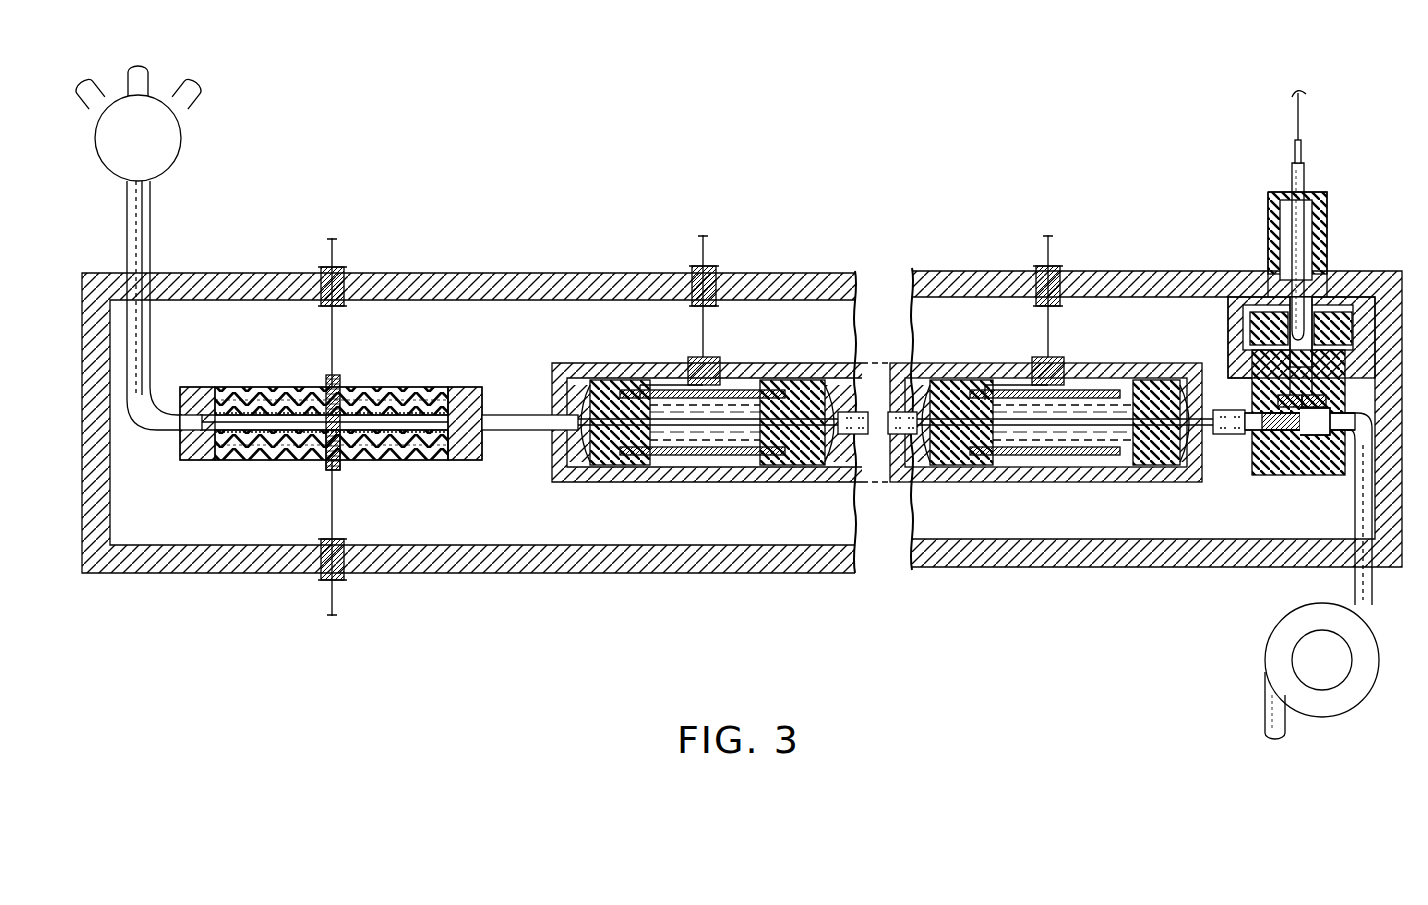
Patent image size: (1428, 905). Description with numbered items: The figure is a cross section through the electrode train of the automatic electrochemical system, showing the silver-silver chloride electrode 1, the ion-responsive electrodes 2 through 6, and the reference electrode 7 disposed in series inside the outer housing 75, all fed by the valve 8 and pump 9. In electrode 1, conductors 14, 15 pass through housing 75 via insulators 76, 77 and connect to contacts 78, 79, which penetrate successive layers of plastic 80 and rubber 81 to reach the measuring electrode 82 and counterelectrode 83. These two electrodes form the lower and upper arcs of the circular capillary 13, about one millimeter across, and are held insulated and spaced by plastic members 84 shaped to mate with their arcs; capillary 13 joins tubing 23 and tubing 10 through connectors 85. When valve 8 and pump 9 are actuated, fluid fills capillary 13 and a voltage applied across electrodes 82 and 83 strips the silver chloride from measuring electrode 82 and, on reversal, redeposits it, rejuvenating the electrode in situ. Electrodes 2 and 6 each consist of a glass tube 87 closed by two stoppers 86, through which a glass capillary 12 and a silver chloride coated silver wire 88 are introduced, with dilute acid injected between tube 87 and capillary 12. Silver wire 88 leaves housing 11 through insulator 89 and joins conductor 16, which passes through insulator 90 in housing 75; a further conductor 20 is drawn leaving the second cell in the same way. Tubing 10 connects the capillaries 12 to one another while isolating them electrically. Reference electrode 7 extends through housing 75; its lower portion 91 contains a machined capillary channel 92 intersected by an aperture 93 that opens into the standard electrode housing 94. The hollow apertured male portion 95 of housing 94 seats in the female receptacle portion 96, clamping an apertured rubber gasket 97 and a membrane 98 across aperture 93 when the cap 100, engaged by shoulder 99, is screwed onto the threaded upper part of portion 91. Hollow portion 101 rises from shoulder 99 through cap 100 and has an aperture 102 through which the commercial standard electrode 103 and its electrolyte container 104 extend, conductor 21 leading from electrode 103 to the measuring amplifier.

The electrode 1 is at (418, 348).
The electrode 2 is at (784, 348).
The electrode 6 is at (1114, 346).
The reference electrode 7 is at (1245, 227).
The valve 8 is at (183, 143).
The pump 9 is at (1266, 655).
The tubing 10 is at (508, 415).
The housing 11 is at (578, 363).
The glass capillary 12 is at (620, 465).
The circular capillary 13 is at (208, 445).
The conductor 14 is at (329, 615).
The conductor 15 is at (330, 250).
The conductor 16 is at (702, 250).
The electrical lead 20 is at (1046, 250).
The conductor 21 is at (1297, 108).
The tubing 23 is at (154, 235).
The housing 75 is at (472, 273).
The insulator 76 is at (346, 582).
The insulator 77 is at (346, 270).
The contact 78 is at (342, 468).
The contact 79 is at (342, 381).
The plastic layer 80 is at (298, 388).
The rubber layer 81 is at (254, 388).
The measuring electrode 82 is at (404, 460).
The counterelectrode 83 is at (408, 390).
The plastic member 84 is at (324, 455).
The connector 85 is at (200, 387).
The stopper 86 is at (580, 482).
The glass tube 87 is at (662, 455).
The silver wire 88 is at (642, 385).
The insulator 89 is at (698, 358).
The insulator 90 is at (720, 270).
The lower portion 91 is at (1294, 450).
The capillary channel 92 is at (1352, 435).
The aperture 93 is at (1284, 430).
The standard electrode housing 94 is at (1266, 325).
The male portion 95 is at (1326, 401).
The female receptacle portion 96 is at (1280, 401).
The rubber gasket 97 is at (1320, 435).
The membrane 98 is at (1280, 430).
The shoulder 99 is at (1264, 278).
The cap 100 is at (1344, 297).
The hollow portion 101 is at (1330, 204).
The aperture 102 is at (1290, 358).
The standard electrode 103 is at (1295, 152).
The electrolyte container 104 is at (1292, 182).